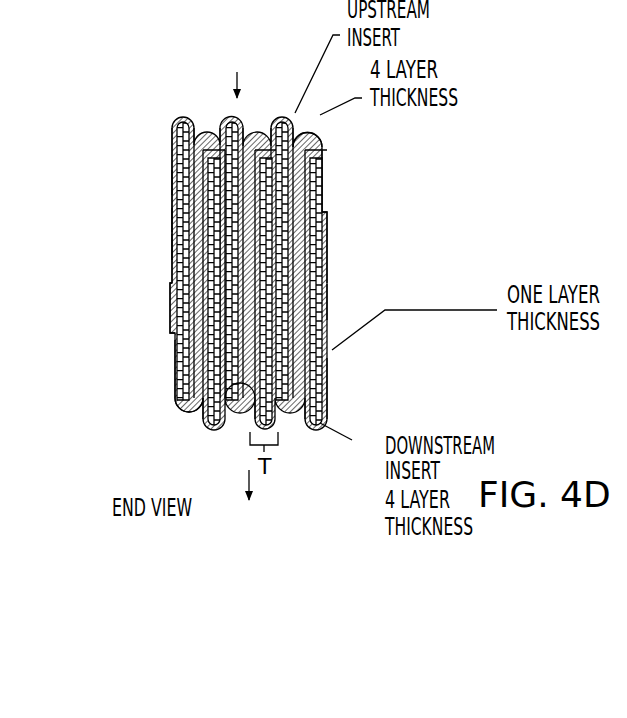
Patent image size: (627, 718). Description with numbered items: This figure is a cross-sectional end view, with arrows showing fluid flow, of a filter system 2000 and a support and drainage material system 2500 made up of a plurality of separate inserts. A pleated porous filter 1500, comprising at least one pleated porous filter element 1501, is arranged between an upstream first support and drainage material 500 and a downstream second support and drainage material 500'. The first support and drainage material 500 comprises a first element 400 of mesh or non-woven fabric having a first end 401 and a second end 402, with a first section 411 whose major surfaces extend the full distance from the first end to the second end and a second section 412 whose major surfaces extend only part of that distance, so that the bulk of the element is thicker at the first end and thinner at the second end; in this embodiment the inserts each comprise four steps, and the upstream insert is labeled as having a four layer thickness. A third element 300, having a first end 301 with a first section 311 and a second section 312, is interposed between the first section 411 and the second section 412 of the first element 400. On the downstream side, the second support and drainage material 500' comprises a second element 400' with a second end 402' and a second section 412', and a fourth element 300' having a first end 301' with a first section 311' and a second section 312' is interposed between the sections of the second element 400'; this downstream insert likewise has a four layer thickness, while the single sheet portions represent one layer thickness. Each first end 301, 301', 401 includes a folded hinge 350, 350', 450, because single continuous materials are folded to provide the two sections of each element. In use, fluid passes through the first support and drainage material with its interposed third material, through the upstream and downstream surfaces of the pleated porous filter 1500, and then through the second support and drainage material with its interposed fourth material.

The filter system 2000 is at (100, 434).
The first support and drainage material 500 is at (163, 274).
The second support and drainage material 500' is at (280, 214).
The first end 401 is at (128, 230).
The folded hinge 450 is at (177, 114).
The first element 400 is at (257, 202).
The support and drainage material system 2500 is at (243, 415).
The first end 301 is at (96, 198).
The folded hinge 350 is at (96, 198).
The second section 412 is at (110, 188).
The third element 300 is at (110, 220).
The second section 312 is at (110, 247).
The first section 311 is at (115, 300).
The first section 411 is at (178, 368).
The second end 402 is at (147, 435).
The second end 402' is at (396, 130).
The pleated porous filter 1500 is at (455, 181).
The pleated porous filter element 1501 is at (322, 178).
The first section 311' is at (385, 249).
The fourth element 300' is at (387, 274).
The second section 312' is at (383, 297).
The second element 400' is at (416, 363).
The second section 412' is at (436, 382).
The first end 301' is at (408, 407).
The folded hinge 350' is at (408, 407).